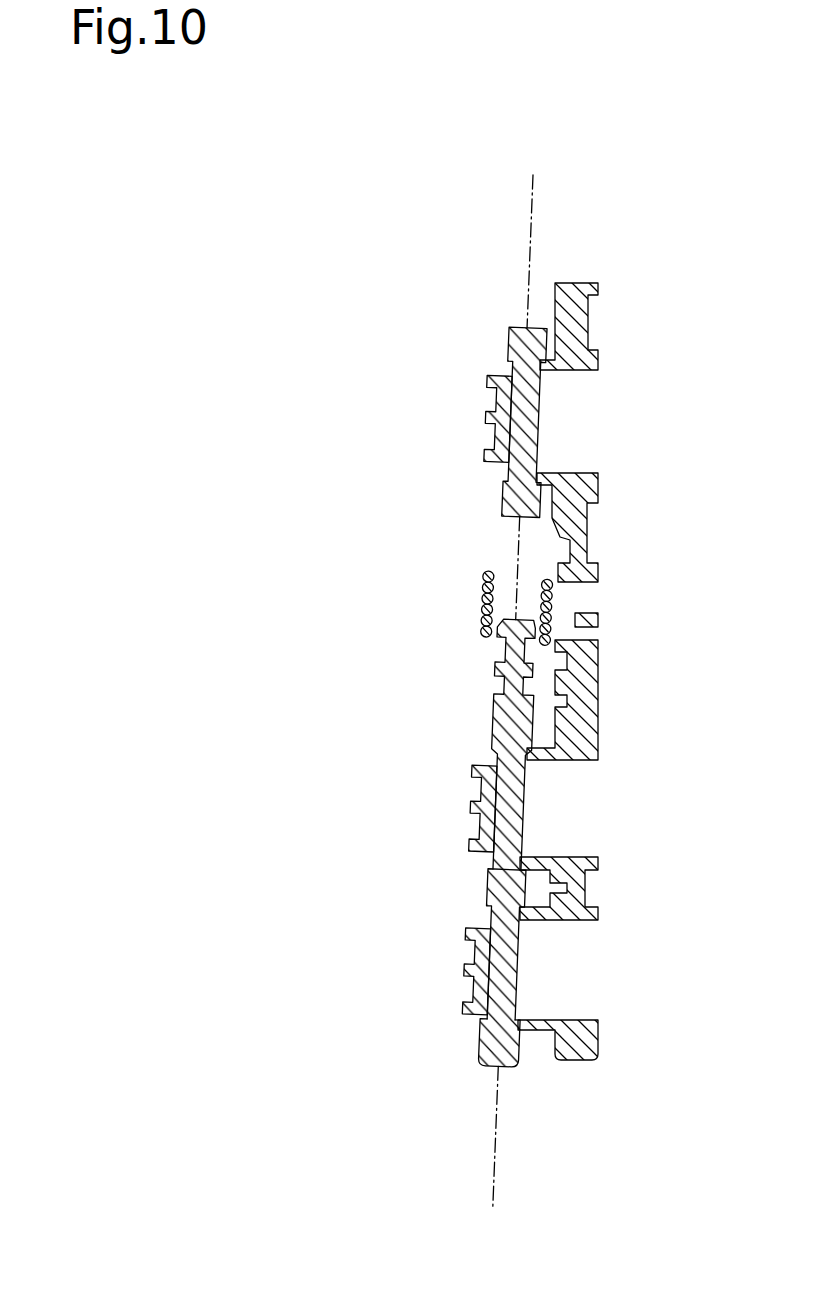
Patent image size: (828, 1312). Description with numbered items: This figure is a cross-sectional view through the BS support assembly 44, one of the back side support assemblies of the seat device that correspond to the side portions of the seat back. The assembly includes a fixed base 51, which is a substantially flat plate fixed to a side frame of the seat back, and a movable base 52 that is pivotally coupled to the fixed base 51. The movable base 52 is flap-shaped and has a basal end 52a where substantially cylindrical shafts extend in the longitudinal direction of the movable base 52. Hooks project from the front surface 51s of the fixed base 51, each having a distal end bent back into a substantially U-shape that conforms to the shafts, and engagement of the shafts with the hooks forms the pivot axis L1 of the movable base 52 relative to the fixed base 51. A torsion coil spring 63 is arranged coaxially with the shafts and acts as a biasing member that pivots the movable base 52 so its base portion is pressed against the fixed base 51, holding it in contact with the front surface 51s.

The BS support assembly 44 is at (244, 170).
The pivot axis L1 is at (530, 210).
The fixed base 51 is at (587, 1062).
The front surface 51s is at (558, 666).
The movable base 52 is at (499, 876).
The basal end 52a is at (483, 1068).
The torsion coil spring 63 is at (484, 576).